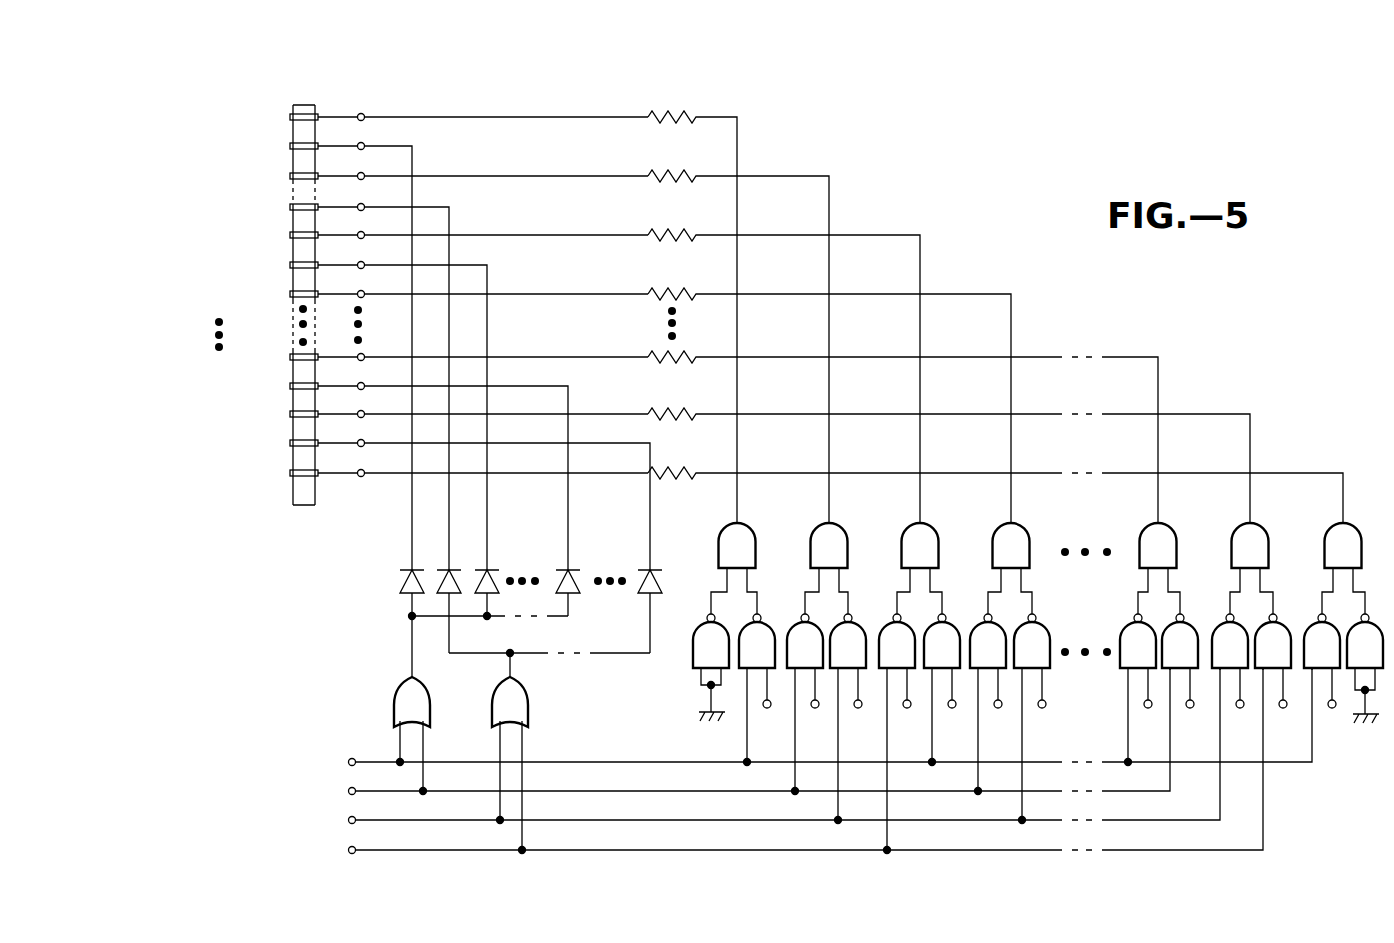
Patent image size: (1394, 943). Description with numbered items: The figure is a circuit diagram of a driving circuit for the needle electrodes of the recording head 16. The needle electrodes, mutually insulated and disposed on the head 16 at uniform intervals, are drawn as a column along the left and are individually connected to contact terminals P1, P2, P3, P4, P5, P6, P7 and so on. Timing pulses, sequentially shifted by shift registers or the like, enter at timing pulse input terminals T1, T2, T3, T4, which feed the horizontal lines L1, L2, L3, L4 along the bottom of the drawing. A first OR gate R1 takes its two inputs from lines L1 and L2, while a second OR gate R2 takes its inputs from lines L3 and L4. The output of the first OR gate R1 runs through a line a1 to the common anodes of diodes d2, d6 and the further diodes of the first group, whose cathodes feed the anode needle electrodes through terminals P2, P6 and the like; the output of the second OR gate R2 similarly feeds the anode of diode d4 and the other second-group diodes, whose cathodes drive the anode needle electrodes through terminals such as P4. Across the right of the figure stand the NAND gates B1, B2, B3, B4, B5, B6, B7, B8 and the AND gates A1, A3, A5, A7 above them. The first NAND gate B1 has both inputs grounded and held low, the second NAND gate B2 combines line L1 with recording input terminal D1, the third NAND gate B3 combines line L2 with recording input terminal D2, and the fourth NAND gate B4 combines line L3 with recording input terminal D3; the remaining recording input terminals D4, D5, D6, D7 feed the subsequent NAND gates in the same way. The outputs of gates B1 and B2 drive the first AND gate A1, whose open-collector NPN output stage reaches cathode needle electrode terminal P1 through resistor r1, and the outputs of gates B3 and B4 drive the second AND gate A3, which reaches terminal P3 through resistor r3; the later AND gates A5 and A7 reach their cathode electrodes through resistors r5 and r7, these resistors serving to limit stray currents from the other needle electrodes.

The head 16 is at (305, 507).
The contact terminal P1 is at (361, 113).
The contact terminal P2 is at (361, 142).
The contact terminal P3 is at (361, 172).
The contact terminal P4 is at (361, 203).
The contact terminal P5 is at (361, 231).
The contact terminal P6 is at (361, 261).
The contact terminal P7 is at (361, 290).
The resistor r1 is at (678, 115).
The resistor r3 is at (685, 170).
The resistor r5 is at (656, 230).
The resistor r7 is at (663, 289).
The diode d2 is at (400, 590).
The diode d4 is at (441, 572).
The diode d6 is at (480, 572).
The line a1 is at (412, 646).
The first OR gate R1 is at (398, 702).
The second OR gate R2 is at (500, 702).
The timing pulse input terminal T1 is at (348, 762).
The timing pulse input terminal T2 is at (348, 791).
The timing pulse input terminal T3 is at (348, 820).
The timing pulse input terminal T4 is at (348, 850).
The line L1 is at (538, 761).
The line L2 is at (548, 790).
The line L3 is at (548, 819).
The line L4 is at (562, 832).
The first AND gate A1 is at (727, 537).
The second AND gate A3 is at (820, 540).
The AND gate A5 is at (912, 540).
The AND gate A7 is at (1002, 540).
The first NAND gate B1 is at (704, 636).
The second NAND gate B2 is at (757, 633).
The third NAND gate B3 is at (797, 642).
The fourth NAND gate B4 is at (852, 633).
The NAND gate B5 is at (890, 642).
The NAND gate B6 is at (945, 633).
The NAND gate B7 is at (983, 642).
The NAND gate B8 is at (1042, 640).
The recording input terminal D1 is at (767, 708).
The recording input terminal D2 is at (815, 708).
The recording input terminal D3 is at (858, 708).
The recording input terminal D4 is at (907, 708).
The recording input terminal D5 is at (952, 708).
The recording input terminal D6 is at (998, 708).
The recording input terminal D7 is at (1042, 708).